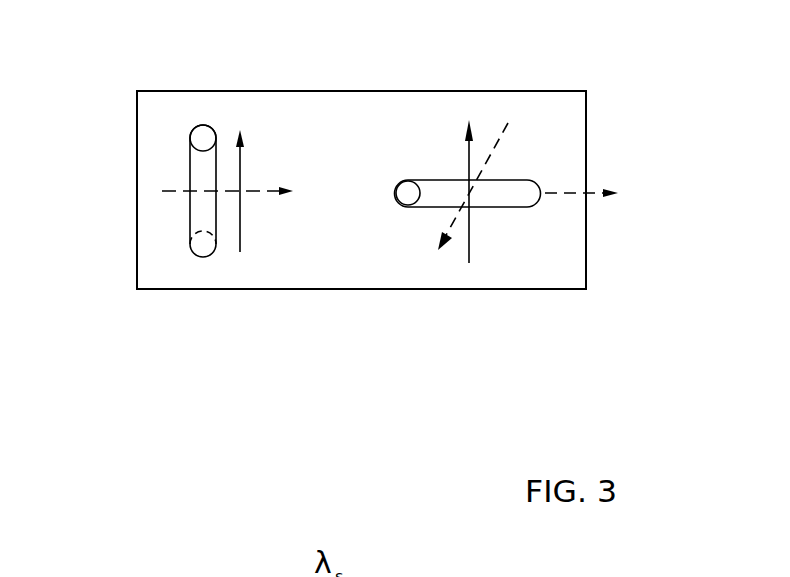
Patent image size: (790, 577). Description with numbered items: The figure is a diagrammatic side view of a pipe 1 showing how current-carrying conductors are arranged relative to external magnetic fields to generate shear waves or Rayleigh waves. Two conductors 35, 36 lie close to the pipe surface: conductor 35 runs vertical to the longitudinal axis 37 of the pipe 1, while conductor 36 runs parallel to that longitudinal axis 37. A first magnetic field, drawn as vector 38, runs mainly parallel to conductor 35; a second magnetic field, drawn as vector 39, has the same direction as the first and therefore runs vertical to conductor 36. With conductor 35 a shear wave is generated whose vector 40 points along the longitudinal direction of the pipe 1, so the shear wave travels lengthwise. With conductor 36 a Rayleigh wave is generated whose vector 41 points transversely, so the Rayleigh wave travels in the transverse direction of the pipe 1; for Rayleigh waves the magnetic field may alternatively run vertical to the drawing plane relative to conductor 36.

The pipe 1 is at (562, 228).
The conductor 35 is at (200, 214).
The conductor 36 is at (410, 190).
The longitudinal axis 37 is at (600, 194).
The vector of first magnetic field 38 is at (240, 235).
The vector of second magnetic field 39 is at (469, 240).
The shear wave vector 40 is at (270, 187).
The Rayleigh wave vector 41 is at (497, 142).